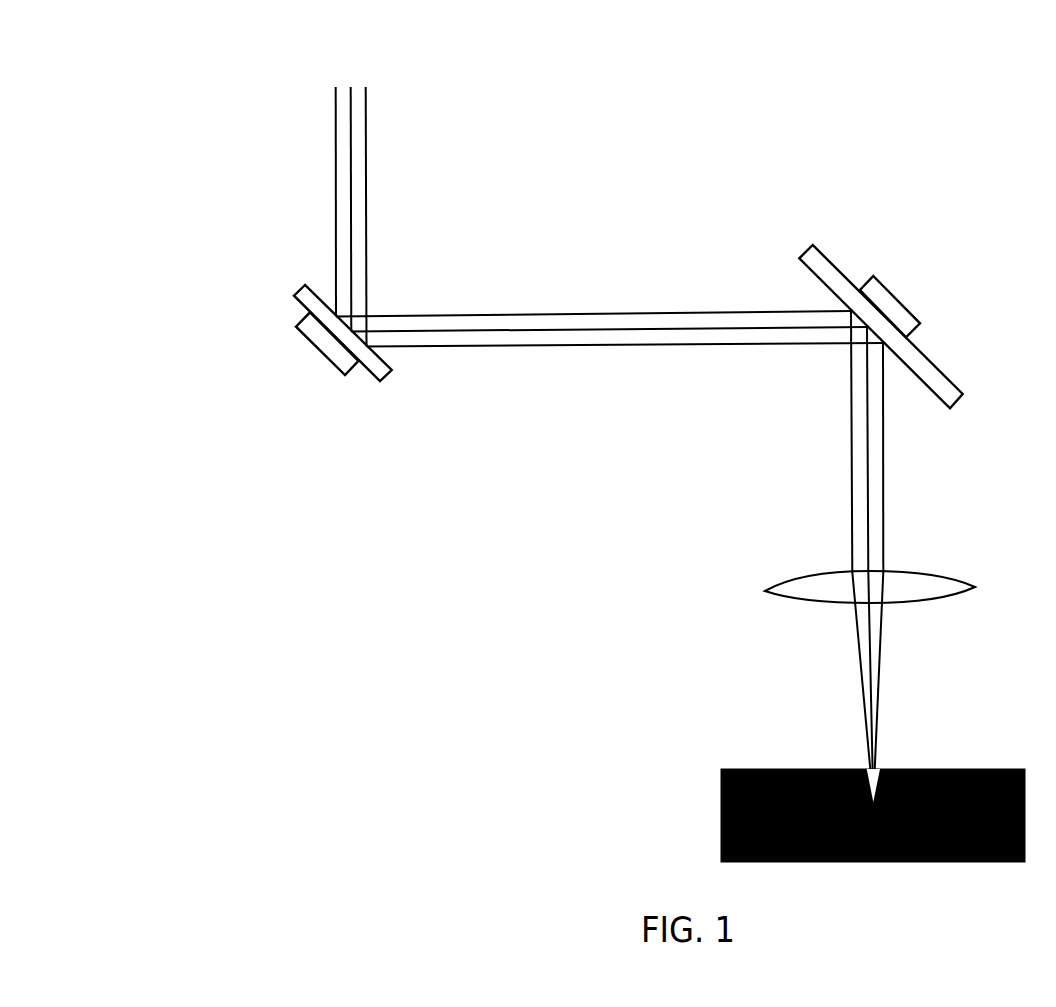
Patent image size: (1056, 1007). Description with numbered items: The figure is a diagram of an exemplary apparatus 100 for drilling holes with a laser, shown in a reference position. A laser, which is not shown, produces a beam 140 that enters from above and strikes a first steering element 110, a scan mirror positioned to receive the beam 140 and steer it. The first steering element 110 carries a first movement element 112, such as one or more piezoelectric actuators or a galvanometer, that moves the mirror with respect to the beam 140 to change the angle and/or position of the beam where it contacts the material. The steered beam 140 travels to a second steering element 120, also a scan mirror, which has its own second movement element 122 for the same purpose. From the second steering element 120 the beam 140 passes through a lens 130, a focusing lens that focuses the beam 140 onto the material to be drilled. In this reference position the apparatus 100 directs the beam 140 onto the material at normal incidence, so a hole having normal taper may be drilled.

The apparatus 100 is at (677, 138).
The first steering element 110 is at (294, 296).
The first movement element 112 is at (296, 327).
The second steering element 120 is at (835, 267).
The second movement element 122 is at (893, 296).
The lens 130 is at (767, 592).
The beam 140 is at (848, 503).